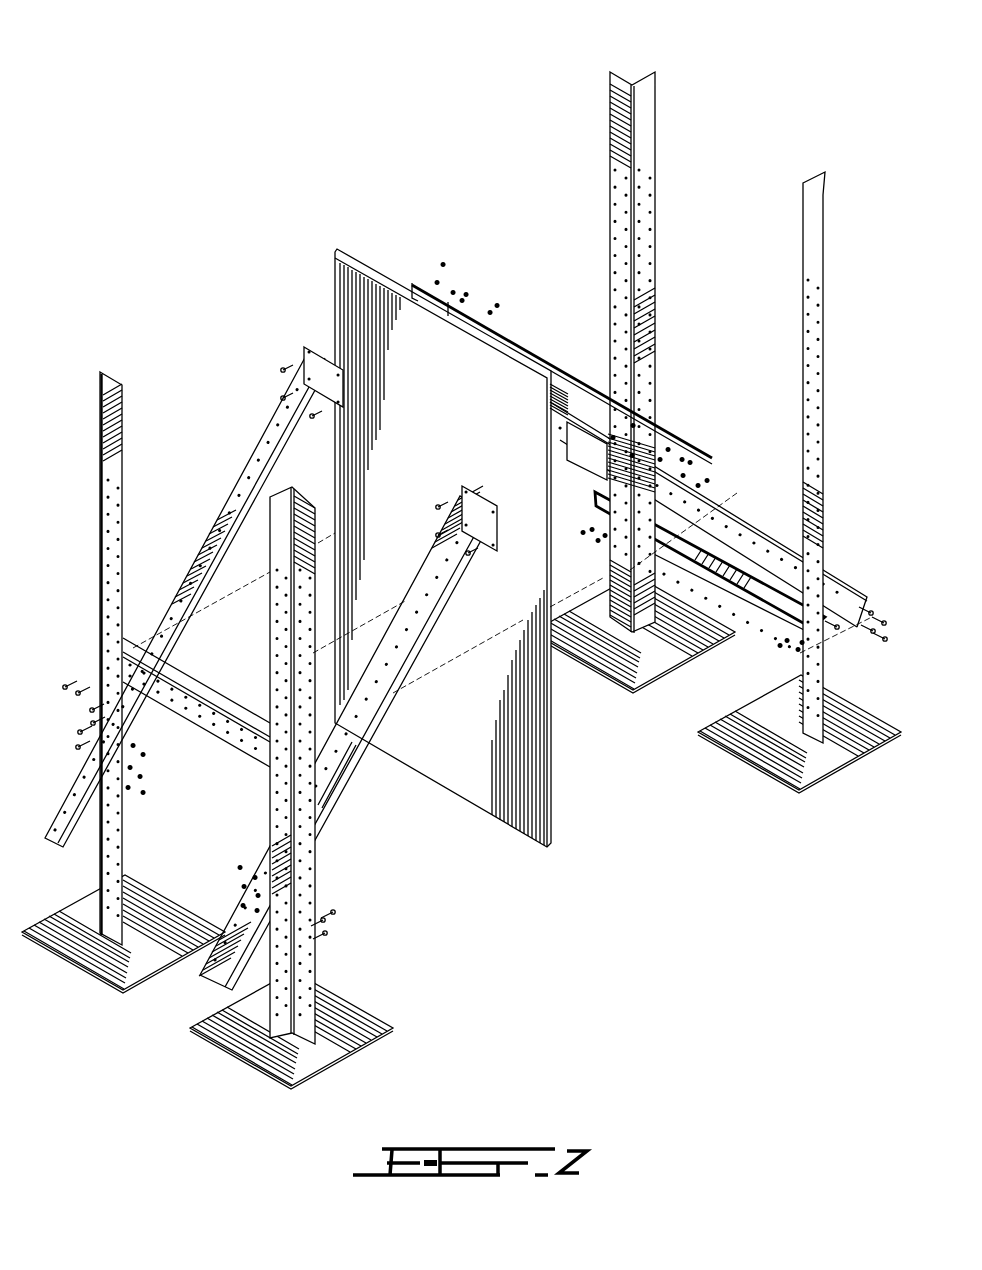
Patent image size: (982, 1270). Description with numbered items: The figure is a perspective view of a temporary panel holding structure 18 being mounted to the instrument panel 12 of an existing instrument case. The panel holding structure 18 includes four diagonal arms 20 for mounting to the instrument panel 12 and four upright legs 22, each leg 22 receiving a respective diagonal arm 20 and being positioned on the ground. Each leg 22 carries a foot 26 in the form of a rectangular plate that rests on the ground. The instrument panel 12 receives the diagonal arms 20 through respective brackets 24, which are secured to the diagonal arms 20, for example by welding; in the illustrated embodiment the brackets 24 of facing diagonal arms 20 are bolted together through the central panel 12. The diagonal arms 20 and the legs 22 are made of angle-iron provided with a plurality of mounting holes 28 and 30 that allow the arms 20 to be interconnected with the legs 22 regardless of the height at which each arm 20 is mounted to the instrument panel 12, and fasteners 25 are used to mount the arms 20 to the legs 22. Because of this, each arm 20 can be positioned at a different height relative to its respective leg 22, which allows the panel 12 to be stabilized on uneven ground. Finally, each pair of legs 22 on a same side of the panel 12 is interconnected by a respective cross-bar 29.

The instrument panel 12 is at (525, 770).
The panel holding structure 18 is at (724, 153).
The diagonal arm 20 is at (385, 695).
The upright leg 22 is at (610, 255).
The bracket 24 is at (342, 385).
The fastener 25 is at (288, 367).
The foot 26 is at (710, 725).
The mounting holes 28 is at (818, 345).
The cross-bar 29 is at (742, 572).
The mounting holes 30 is at (338, 795).